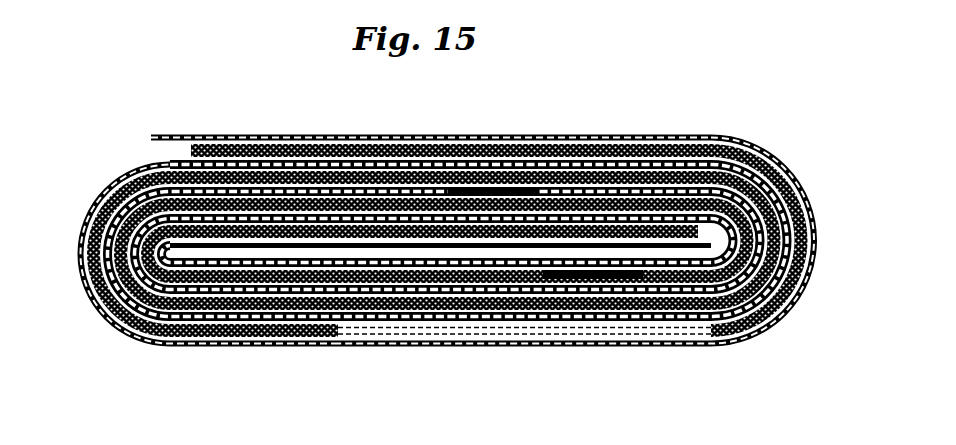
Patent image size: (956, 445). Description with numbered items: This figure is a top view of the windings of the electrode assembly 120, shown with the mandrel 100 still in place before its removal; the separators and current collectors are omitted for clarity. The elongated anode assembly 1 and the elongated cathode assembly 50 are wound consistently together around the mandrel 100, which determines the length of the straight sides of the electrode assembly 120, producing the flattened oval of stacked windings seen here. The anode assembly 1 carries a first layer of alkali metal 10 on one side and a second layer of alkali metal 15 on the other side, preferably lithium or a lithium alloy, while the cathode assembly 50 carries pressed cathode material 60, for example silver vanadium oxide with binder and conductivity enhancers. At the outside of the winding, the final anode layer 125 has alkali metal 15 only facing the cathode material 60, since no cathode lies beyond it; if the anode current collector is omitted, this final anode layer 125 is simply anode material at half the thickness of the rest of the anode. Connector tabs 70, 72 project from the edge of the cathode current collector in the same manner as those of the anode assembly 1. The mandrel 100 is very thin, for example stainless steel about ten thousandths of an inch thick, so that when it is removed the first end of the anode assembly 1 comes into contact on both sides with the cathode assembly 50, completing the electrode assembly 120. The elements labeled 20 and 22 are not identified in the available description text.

The anode assembly 1 is at (322, 338).
The first layer of alkali metal 10 is at (438, 253).
The second layer of alkali metal 15 is at (188, 127).
The cathode current collector 20 is at (467, 187).
The anode current collector 22 is at (287, 133).
The cathode assembly 50 is at (512, 336).
The cathode material layer 60 is at (535, 137).
The connector tab 70 is at (610, 263).
The connector tab 72 is at (380, 327).
The mandrel 100 is at (738, 142).
The electrode assembly 120 is at (643, 105).
The final anode layer 125 is at (193, 340).